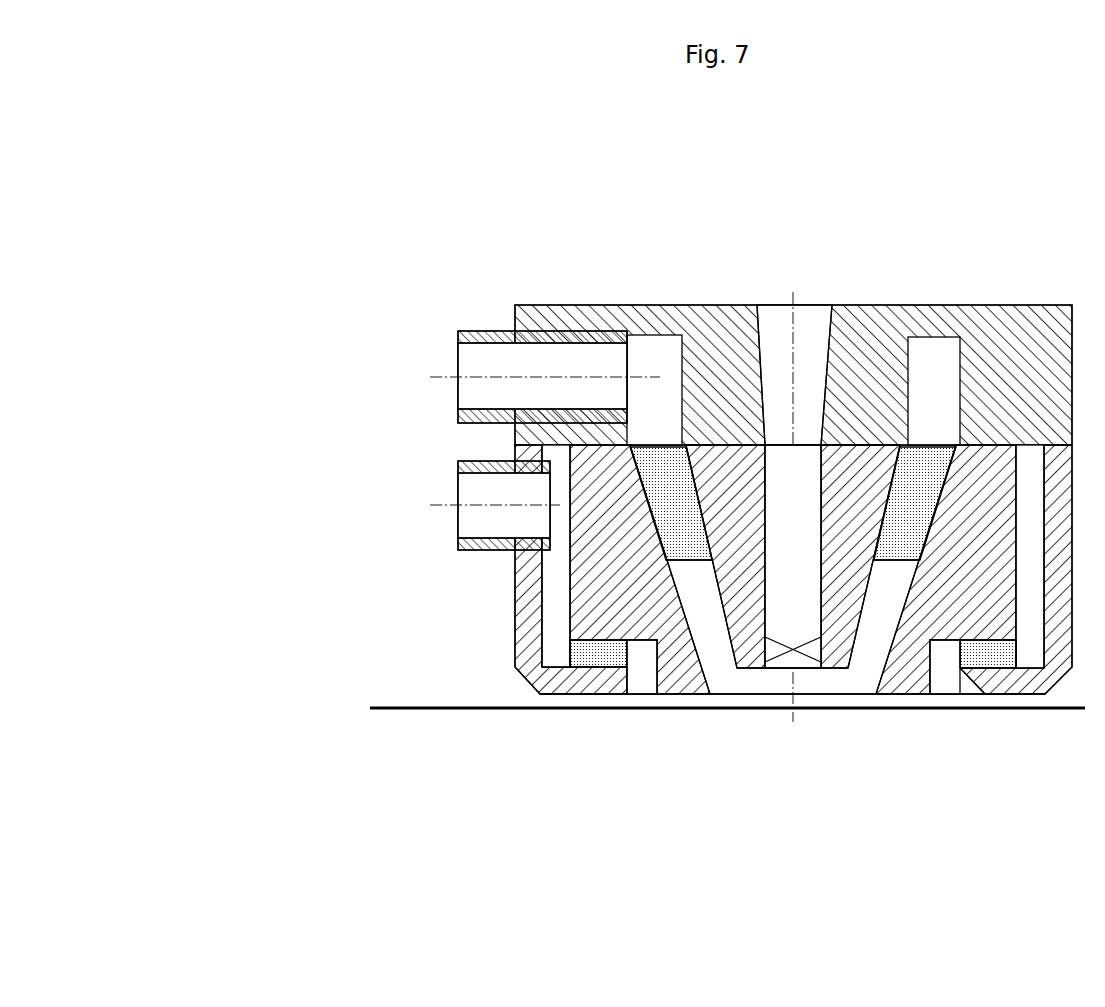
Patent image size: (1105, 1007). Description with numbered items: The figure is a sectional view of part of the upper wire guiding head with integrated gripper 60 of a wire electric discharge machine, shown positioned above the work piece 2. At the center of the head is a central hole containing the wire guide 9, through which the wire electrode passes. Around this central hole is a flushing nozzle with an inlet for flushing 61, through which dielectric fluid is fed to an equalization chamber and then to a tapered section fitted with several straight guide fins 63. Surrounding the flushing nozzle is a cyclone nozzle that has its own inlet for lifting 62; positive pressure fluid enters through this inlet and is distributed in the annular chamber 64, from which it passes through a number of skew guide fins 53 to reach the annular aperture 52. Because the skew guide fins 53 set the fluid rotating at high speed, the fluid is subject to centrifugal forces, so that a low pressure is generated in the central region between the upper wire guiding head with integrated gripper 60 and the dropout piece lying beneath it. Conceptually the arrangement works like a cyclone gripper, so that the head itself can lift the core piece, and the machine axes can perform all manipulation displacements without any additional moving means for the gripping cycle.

The upper wire guiding head with integrated gripper 60 is at (382, 229).
The inlet for flushing 61 is at (488, 400).
The inlet for lifting 62 is at (467, 493).
The straight guide fin 63 is at (683, 533).
The annular chamber 64 is at (560, 556).
The skew guide fin 53 is at (576, 655).
The annular aperture 52 is at (638, 682).
The work piece 2 is at (385, 700).
The wire guide 9 is at (777, 657).